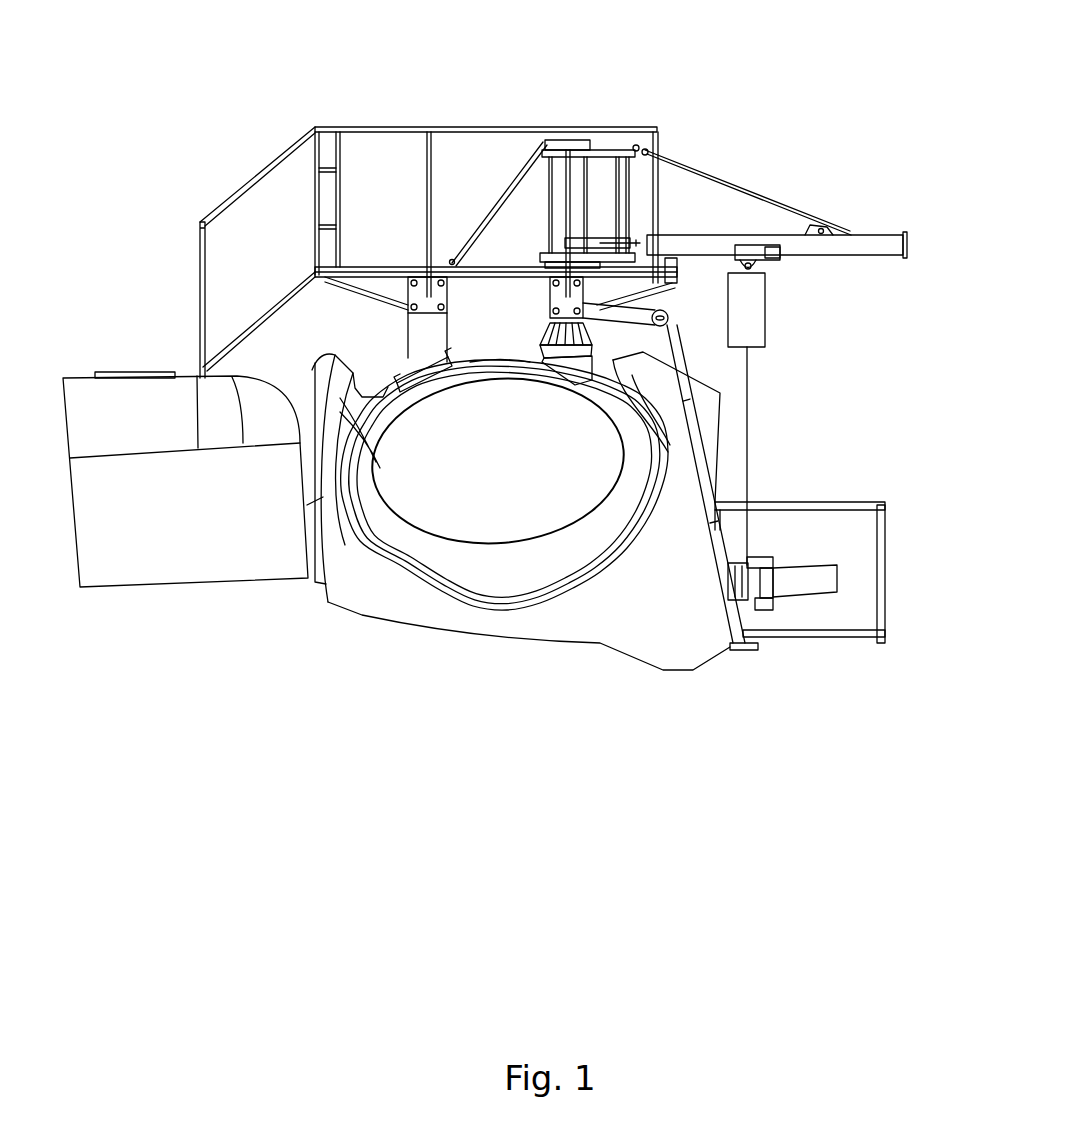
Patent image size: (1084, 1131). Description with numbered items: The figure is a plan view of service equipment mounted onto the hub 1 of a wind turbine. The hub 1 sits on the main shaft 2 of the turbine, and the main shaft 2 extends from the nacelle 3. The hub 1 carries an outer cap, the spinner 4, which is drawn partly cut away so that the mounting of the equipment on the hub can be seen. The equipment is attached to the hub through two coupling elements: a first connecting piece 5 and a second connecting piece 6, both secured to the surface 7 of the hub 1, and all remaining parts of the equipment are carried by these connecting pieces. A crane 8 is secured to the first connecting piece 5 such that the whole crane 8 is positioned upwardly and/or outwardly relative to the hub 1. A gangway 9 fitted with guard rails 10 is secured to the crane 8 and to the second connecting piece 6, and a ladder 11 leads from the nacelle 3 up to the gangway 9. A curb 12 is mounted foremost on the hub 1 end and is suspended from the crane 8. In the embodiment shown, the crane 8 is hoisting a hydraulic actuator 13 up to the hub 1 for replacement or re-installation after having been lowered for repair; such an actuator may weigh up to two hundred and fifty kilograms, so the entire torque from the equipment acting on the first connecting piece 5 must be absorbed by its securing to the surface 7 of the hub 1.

The hub 1 is at (485, 373).
The main shaft 2 is at (320, 575).
The nacelle 3 is at (173, 560).
The spinner 4 is at (592, 627).
The first connecting piece 5 is at (568, 362).
The second connecting piece 6 is at (420, 377).
The surface 7 is at (511, 350).
The crane 8 is at (578, 193).
The gangway 9 is at (378, 272).
The guard rails 10 is at (409, 130).
The ladder 11 is at (273, 305).
The curb 12 is at (825, 650).
The hydraulic actuator 13 is at (808, 577).